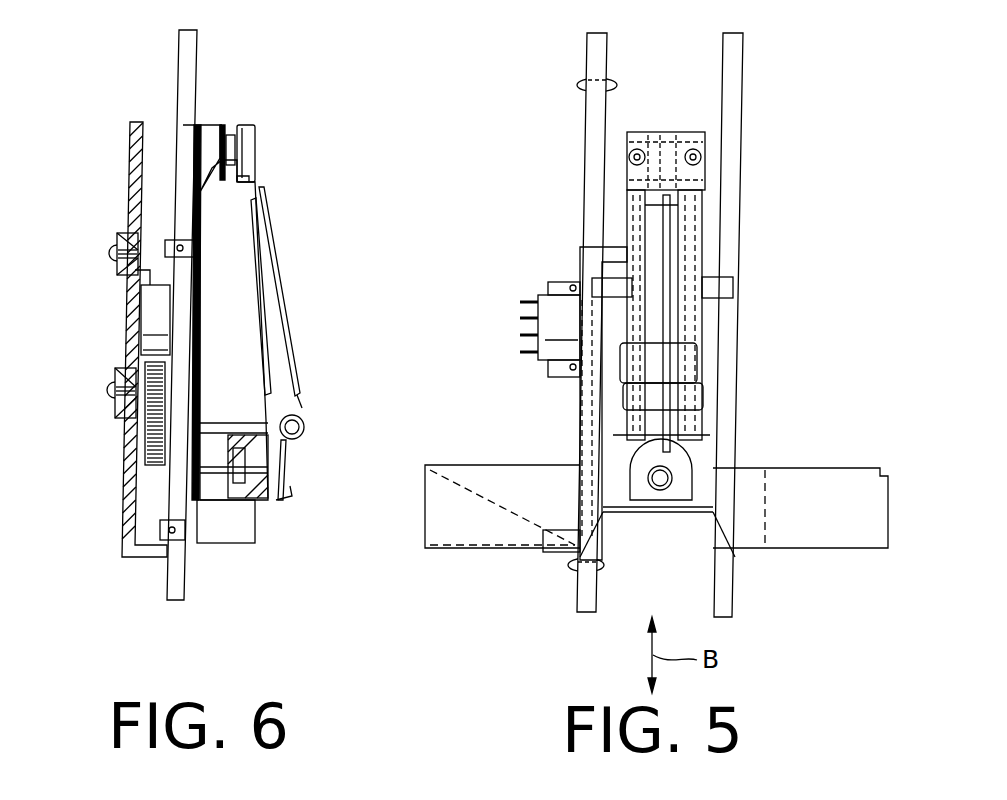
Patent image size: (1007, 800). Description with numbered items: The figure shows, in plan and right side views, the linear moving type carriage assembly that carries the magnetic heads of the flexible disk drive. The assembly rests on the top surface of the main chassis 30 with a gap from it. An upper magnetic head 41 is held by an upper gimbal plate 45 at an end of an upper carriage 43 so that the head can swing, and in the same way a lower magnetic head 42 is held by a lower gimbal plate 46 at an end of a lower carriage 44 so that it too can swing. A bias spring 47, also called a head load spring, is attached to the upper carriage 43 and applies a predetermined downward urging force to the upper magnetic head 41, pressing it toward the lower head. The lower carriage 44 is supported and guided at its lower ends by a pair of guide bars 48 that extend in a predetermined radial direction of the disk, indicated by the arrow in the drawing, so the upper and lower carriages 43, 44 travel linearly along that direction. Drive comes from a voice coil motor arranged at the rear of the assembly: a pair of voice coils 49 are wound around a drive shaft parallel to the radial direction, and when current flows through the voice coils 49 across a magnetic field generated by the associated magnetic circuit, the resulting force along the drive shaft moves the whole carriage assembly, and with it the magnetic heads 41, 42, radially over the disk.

In FIG. 6, the main chassis 30 is at (124, 493).
In FIG. 6, the upper magnetic head 41 is at (232, 137).
In FIG. 6, the lower magnetic head 42 is at (226, 135).
In FIG. 6, the upper carriage 43 is at (283, 352).
In FIG. 5, the upper carriage 43 is at (703, 230).
In FIG. 6, the lower carriage 44 is at (205, 222).
In FIG. 5, the lower carriage 44 is at (612, 245).
In FIG. 6, the upper gimbal plate 45 is at (256, 150).
In FIG. 5, the upper gimbal plate 45 is at (627, 152).
In FIG. 6, the lower gimbal plate 46 is at (210, 150).
In FIG. 6, the bias spring 47 is at (288, 290).
In FIG. 5, the bias spring 47 is at (667, 360).
In FIG. 6, the guide bars 48 is at (187, 65).
In FIG. 5, the guide bars 48 is at (586, 122).
In FIG. 5, the voice coils 49 is at (425, 527).